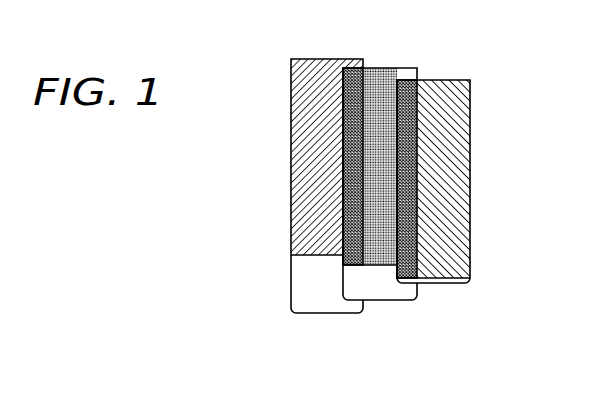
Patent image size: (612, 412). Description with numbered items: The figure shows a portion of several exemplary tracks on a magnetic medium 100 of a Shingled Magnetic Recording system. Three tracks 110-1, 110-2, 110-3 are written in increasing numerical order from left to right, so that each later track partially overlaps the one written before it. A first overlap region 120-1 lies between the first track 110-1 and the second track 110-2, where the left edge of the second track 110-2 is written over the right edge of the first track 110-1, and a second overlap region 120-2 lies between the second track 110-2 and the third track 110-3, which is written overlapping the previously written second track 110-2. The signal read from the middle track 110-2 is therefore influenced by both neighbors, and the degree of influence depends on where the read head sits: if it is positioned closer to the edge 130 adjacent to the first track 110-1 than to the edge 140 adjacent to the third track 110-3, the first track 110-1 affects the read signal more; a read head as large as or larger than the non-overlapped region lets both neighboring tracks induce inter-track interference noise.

The magnetic medium 100 is at (180, 143).
The first track 110-1 is at (327, 313).
The second track 110-2 is at (382, 300).
The third track 110-3 is at (433, 283).
The first overlap region 120-1 is at (363, 68).
The second overlap region 120-2 is at (417, 80).
The edge 130 is at (340, 152).
The edge 140 is at (400, 165).